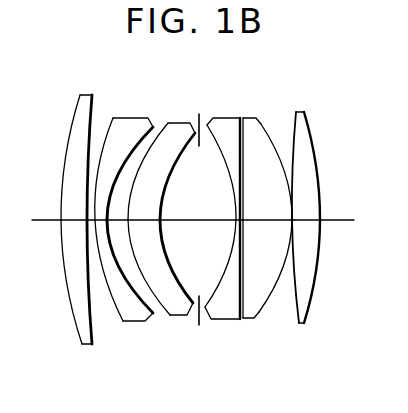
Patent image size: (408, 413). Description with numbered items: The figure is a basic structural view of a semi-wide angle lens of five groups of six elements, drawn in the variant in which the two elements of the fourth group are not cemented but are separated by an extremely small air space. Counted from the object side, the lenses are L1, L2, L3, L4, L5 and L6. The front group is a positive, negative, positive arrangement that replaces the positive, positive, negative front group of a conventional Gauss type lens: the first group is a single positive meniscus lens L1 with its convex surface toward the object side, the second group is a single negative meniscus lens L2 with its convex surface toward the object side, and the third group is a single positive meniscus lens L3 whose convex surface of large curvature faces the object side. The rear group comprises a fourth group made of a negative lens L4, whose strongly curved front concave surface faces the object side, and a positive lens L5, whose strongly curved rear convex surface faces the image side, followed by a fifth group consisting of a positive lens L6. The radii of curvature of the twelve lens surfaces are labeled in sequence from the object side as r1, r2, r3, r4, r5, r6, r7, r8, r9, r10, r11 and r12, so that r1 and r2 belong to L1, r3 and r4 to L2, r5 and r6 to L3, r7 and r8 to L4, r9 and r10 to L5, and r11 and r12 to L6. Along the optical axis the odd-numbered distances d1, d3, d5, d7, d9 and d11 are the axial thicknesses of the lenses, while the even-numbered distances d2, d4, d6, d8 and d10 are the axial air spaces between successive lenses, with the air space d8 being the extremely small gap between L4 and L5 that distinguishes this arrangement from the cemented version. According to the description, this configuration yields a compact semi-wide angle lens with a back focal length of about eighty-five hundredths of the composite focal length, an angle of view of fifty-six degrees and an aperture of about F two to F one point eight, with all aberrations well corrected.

The radius of curvature of first lens surface r1 is at (72, 122).
The radius of curvature of second lens surface r2 is at (97, 200).
The radius of curvature of third lens surface r3 is at (112, 126).
The radius of curvature of fourth lens surface r4 is at (148, 118).
The radius of curvature of fifth lens surface r5 is at (165, 124).
The radius of curvature of sixth lens surface r6 is at (167, 183).
The radius of curvature of seventh lens surface r7 is at (216, 118).
The radius of curvature of eighth lens surface r8 is at (217, 218).
The radius of curvature of ninth lens surface r9 is at (247, 119).
The radius of curvature of tenth lens surface r10 is at (281, 183).
The radius of curvature of eleventh lens surface r11 is at (294, 125).
The radius of curvature of twelfth lens surface r12 is at (315, 154).
The axial thickness of first lens d1 is at (61, 223).
The axial air space between first and second lenses d2 is at (88, 227).
The axial thickness of second lens d3 is at (98, 228).
The axial air space between second and third lenses d4 is at (117, 218).
The axial thickness of third lens d5 is at (147, 217).
The axial air space between third and fourth lenses d6 is at (190, 218).
The axial thickness of fourth lens d7 is at (241, 220).
The axial air space between fourth and fifth lenses d8 is at (243, 218).
The axial thickness of fifth lens d9 is at (269, 219).
The axial air space between fifth and sixth lenses d10 is at (292, 224).
The axial thickness of sixth lens d11 is at (311, 222).
The positive meniscus lens L1 is at (65, 225).
The negative meniscus lens L2 is at (136, 223).
The positive meniscus lens L3 is at (161, 232).
The negative lens L4 is at (219, 224).
The positive lens L5 is at (273, 212).
The positive lens L6 is at (325, 224).